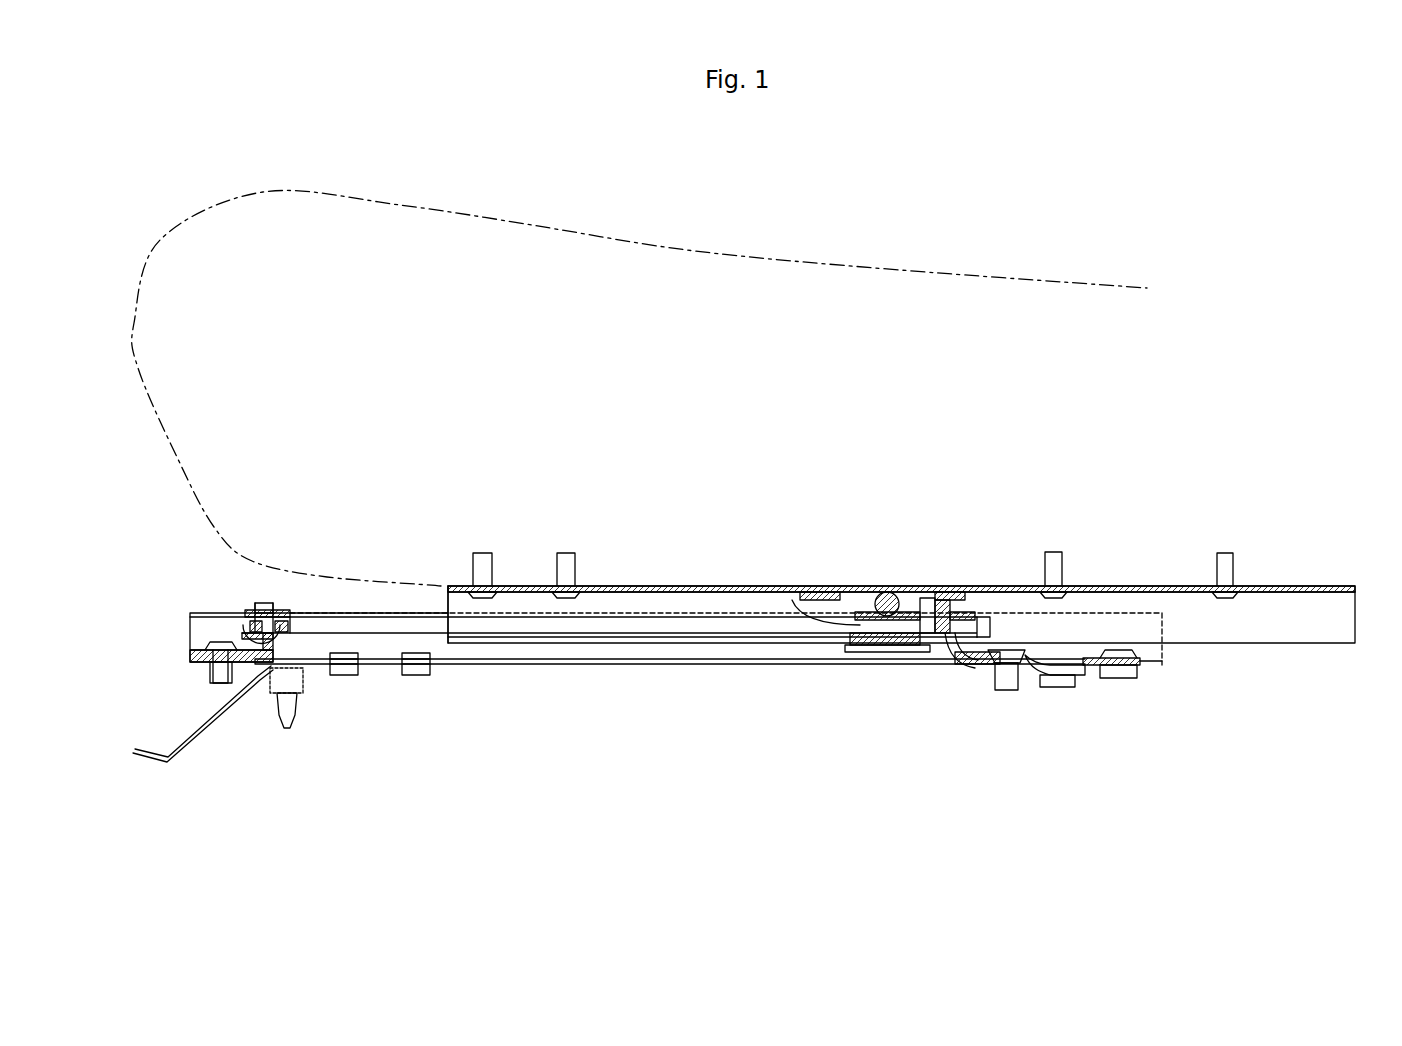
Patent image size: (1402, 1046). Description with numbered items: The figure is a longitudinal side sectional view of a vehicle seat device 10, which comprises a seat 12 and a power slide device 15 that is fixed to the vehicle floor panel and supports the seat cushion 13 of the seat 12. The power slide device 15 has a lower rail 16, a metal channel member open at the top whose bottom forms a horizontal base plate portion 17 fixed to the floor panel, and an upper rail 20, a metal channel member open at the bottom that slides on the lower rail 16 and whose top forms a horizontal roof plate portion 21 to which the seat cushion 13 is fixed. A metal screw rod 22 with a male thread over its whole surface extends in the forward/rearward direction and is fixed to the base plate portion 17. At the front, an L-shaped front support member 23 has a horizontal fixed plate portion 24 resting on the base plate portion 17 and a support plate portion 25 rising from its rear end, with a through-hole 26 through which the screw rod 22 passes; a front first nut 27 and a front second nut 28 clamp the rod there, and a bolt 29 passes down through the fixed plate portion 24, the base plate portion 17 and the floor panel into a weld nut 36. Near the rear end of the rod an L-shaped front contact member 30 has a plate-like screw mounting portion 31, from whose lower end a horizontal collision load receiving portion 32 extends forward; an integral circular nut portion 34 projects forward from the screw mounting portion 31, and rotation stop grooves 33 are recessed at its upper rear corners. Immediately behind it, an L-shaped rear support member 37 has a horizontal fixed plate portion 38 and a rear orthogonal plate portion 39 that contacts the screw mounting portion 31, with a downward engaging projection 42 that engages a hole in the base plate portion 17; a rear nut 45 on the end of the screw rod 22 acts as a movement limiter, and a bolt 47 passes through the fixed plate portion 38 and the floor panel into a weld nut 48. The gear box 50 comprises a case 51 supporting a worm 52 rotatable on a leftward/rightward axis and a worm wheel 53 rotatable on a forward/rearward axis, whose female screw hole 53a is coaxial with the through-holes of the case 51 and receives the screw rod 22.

The vehicle seat device 10 is at (985, 199).
The seat 12 is at (639, 380).
The seat cushion 13 is at (733, 266).
The power slide device 15 is at (193, 575).
The lower rail 16 is at (200, 636).
The base plate portion 17 is at (753, 667).
The upper rail 20 is at (1265, 633).
The roof plate portion 21 is at (1160, 586).
The screw rod 22 is at (625, 627).
The front support member 23 is at (204, 690).
The fixed plate portion 24 is at (215, 652).
The support plate portion 25 is at (283, 607).
The through-hole 26 is at (255, 622).
The front first nut 27 is at (262, 605).
The front second nut 28 is at (292, 613).
The bolt 29 is at (222, 687).
The front contact member 30 is at (890, 705).
The collision load receiving portion 32 is at (925, 660).
The screw mounting portion 31 is at (948, 613).
The rotation stop groove 33 is at (978, 640).
The nut portion 34 is at (935, 613).
The weld nut 36 is at (207, 675).
The rear support member 37 is at (1002, 557).
The rear orthogonal plate portion 39 is at (973, 613).
The fixed plate portion 38 is at (955, 664).
The engaging projection 42 is at (978, 668).
The rear nut 45 is at (947, 655).
The bolt 47 is at (1008, 680).
The weld nut 48 is at (1023, 680).
The gear box 50 is at (830, 612).
The case 51 is at (860, 650).
The worm 52 is at (888, 592).
The worm wheel 53 is at (875, 607).
The female screw hole 53a is at (795, 618).